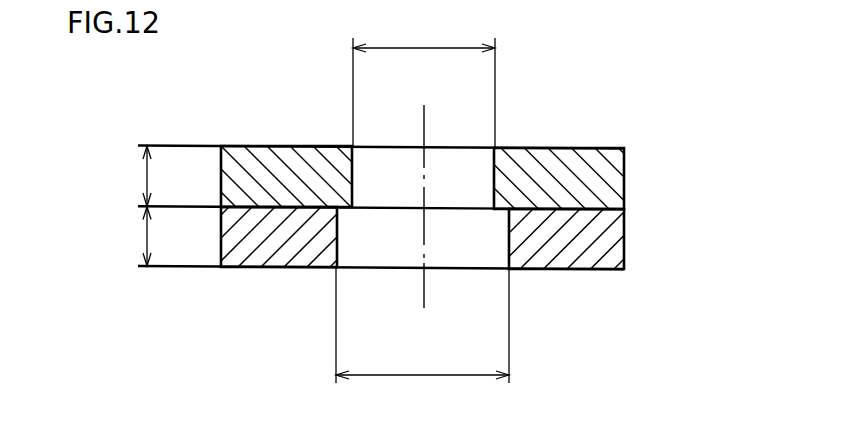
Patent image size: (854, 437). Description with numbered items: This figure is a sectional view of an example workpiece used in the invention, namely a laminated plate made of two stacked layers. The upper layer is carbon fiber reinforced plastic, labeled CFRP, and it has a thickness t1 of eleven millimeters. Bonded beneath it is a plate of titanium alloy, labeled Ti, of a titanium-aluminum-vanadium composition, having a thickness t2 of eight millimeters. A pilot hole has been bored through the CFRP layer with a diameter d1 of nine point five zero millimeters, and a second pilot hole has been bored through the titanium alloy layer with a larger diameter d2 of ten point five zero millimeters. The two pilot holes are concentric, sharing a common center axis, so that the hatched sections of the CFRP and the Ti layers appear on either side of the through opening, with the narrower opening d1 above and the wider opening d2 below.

The element CFRP is at (607, 178).
The titanium alloy Ti is at (607, 238).
The thickness of CFRP t1 is at (143, 177).
The thickness of titanium alloy t2 is at (143, 240).
The diameter of pilot hole in CFRP d1 is at (424, 85).
The diameter of pilot hole in titanium alloy d2 is at (422, 325).